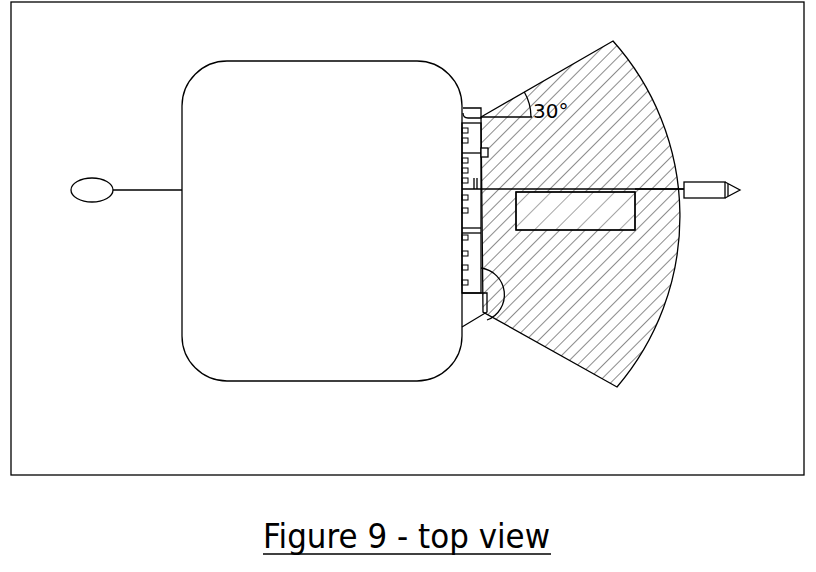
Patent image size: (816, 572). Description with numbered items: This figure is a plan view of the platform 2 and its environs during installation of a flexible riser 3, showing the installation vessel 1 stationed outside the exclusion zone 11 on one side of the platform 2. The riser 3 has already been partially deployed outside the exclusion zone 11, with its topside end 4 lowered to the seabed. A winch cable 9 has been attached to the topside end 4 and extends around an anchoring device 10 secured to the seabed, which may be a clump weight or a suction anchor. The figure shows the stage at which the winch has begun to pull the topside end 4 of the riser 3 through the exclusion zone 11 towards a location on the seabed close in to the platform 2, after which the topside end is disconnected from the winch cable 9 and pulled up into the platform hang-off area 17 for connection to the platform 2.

The installation vessel 1 is at (707, 182).
The platform 2 is at (250, 383).
The flexible riser 3 is at (622, 189).
The topside end 4 is at (595, 189).
The winch cable 9 is at (148, 190).
The anchoring device 10 is at (92, 178).
The exclusion zone 11 is at (633, 62).
The platform hang-off area 17 is at (490, 316).